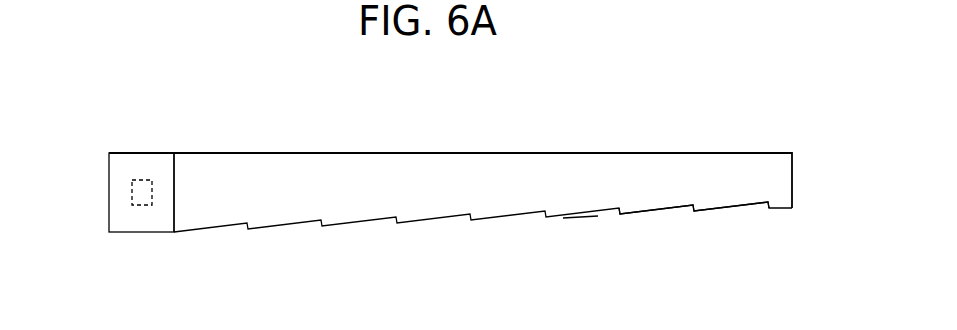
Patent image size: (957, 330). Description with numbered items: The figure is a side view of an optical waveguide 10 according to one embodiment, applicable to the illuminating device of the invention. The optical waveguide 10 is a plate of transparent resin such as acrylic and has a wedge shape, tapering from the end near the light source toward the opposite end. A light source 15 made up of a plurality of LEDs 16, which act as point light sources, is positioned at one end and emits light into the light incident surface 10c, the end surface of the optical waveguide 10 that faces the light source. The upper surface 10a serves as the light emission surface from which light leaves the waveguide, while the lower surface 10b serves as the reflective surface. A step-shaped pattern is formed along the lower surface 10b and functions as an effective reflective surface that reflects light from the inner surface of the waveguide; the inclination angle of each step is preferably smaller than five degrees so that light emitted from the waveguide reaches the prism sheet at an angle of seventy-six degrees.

The optical waveguide 10 is at (777, 173).
The upper surface 10a is at (641, 153).
The lower surface 10b is at (675, 208).
The light incident surface 10c is at (175, 216).
The light source 15 is at (125, 165).
The LEDs 16 is at (133, 203).